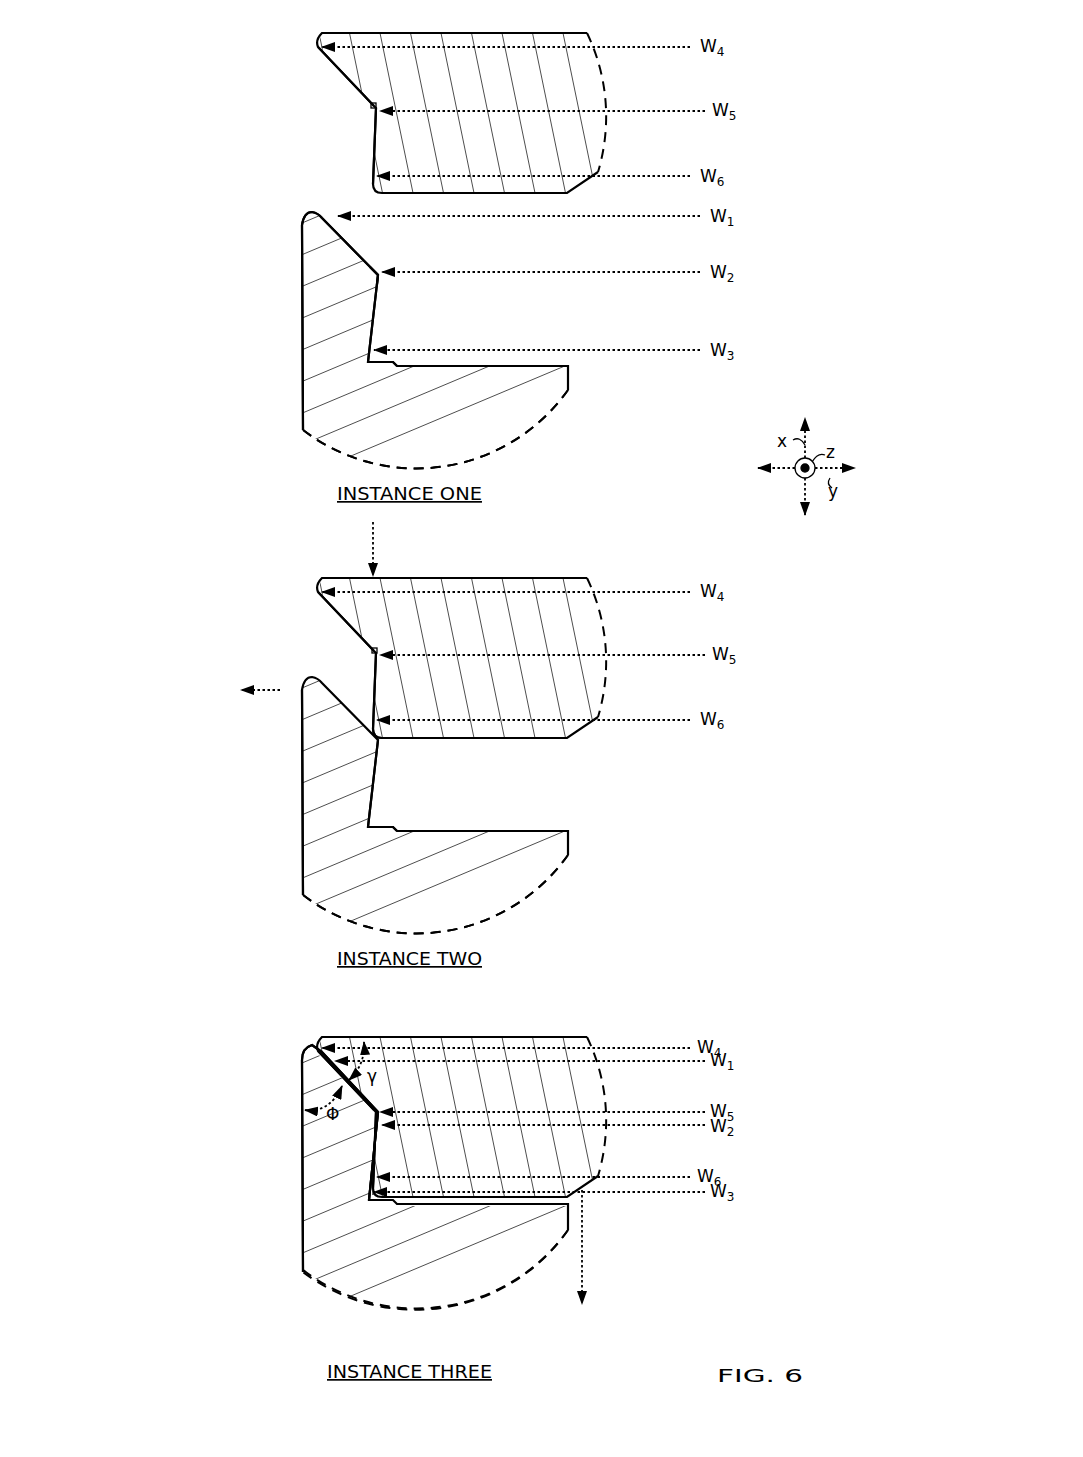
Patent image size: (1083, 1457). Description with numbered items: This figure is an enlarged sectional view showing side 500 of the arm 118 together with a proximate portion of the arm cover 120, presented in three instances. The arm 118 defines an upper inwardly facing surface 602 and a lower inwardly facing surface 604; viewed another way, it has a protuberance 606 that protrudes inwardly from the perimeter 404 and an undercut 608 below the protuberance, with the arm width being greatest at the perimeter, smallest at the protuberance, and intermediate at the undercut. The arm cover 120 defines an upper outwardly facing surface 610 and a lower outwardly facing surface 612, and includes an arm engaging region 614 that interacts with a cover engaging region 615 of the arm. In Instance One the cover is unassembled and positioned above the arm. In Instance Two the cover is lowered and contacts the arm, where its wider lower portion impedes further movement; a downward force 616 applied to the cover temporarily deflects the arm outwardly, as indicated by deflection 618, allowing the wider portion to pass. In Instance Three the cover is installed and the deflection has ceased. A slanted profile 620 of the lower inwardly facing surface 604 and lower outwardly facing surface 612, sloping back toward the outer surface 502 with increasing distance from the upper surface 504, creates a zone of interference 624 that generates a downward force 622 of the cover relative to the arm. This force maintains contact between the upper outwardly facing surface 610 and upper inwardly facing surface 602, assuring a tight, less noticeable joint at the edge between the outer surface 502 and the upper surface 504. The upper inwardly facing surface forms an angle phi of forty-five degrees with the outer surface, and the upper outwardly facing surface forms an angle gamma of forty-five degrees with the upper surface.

The arm cover 120 is at (610, 133).
The arm 118 is at (300, 278).
The upper surface 504 is at (518, 33).
The upper outwardly facing surface 610 is at (355, 85).
The arm engaging region 614 is at (370, 114).
The lower outwardly facing surface 612 is at (373, 152).
The perimeter 404 is at (302, 216).
The upper inwardly facing surface 602 is at (355, 249).
The protuberance 606 is at (385, 290).
The lower inwardly facing surface 604 is at (375, 320).
The outer surface 502 is at (302, 345).
The undercut 608 is at (376, 340).
The side 500 is at (435, 847).
The downward force 616 is at (380, 535).
The deflection 618 is at (280, 690).
The cover engaging region 615 is at (395, 748).
The zone of interference 624 is at (372, 1176).
The slanted profile 620 is at (362, 1206).
The downward force 622 is at (585, 1238).